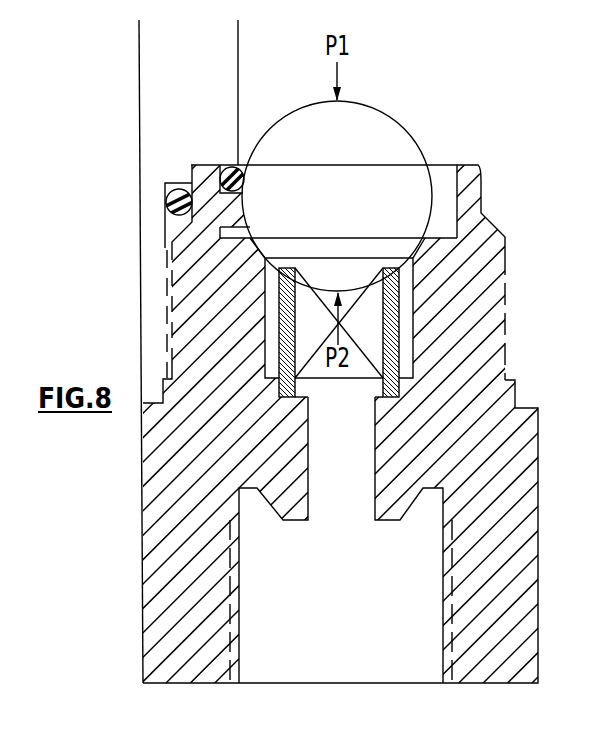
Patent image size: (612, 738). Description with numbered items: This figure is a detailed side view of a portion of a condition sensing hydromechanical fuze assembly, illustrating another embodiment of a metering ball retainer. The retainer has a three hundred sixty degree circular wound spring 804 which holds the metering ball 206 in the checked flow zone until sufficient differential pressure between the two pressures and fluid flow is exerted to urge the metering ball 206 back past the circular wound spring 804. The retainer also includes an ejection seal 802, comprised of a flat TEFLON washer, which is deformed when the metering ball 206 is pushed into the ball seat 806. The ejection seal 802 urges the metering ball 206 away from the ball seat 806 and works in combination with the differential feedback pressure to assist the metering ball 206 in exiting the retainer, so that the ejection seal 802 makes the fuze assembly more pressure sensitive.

The metering ball 206 is at (410, 128).
The ejection seal 802 is at (253, 251).
The circular wound spring 804 is at (232, 166).
The ball seat 806 is at (417, 253).